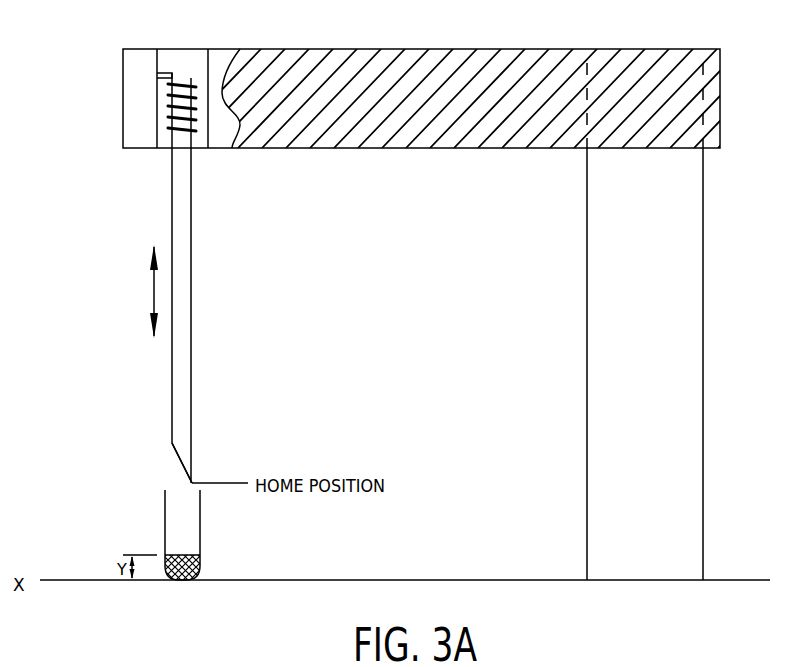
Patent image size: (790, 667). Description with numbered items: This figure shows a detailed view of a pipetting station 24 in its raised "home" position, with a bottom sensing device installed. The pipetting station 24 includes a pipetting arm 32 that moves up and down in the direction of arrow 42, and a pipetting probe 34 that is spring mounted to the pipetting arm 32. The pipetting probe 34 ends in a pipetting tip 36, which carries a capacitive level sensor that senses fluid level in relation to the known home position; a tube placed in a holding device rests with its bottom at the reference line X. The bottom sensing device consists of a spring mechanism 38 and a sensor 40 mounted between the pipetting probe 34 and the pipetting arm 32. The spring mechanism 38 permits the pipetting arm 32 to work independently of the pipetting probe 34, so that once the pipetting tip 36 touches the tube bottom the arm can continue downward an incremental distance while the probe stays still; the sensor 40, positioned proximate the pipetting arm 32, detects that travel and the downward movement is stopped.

The pipetting station 24 is at (712, 369).
The pipetting arm 32 is at (485, 48).
The pipetting probe 34 is at (192, 330).
The pipetting tip 36 is at (193, 474).
The spring mechanism 38 is at (192, 80).
The sensor 40 is at (160, 74).
The arrow 42 is at (140, 291).